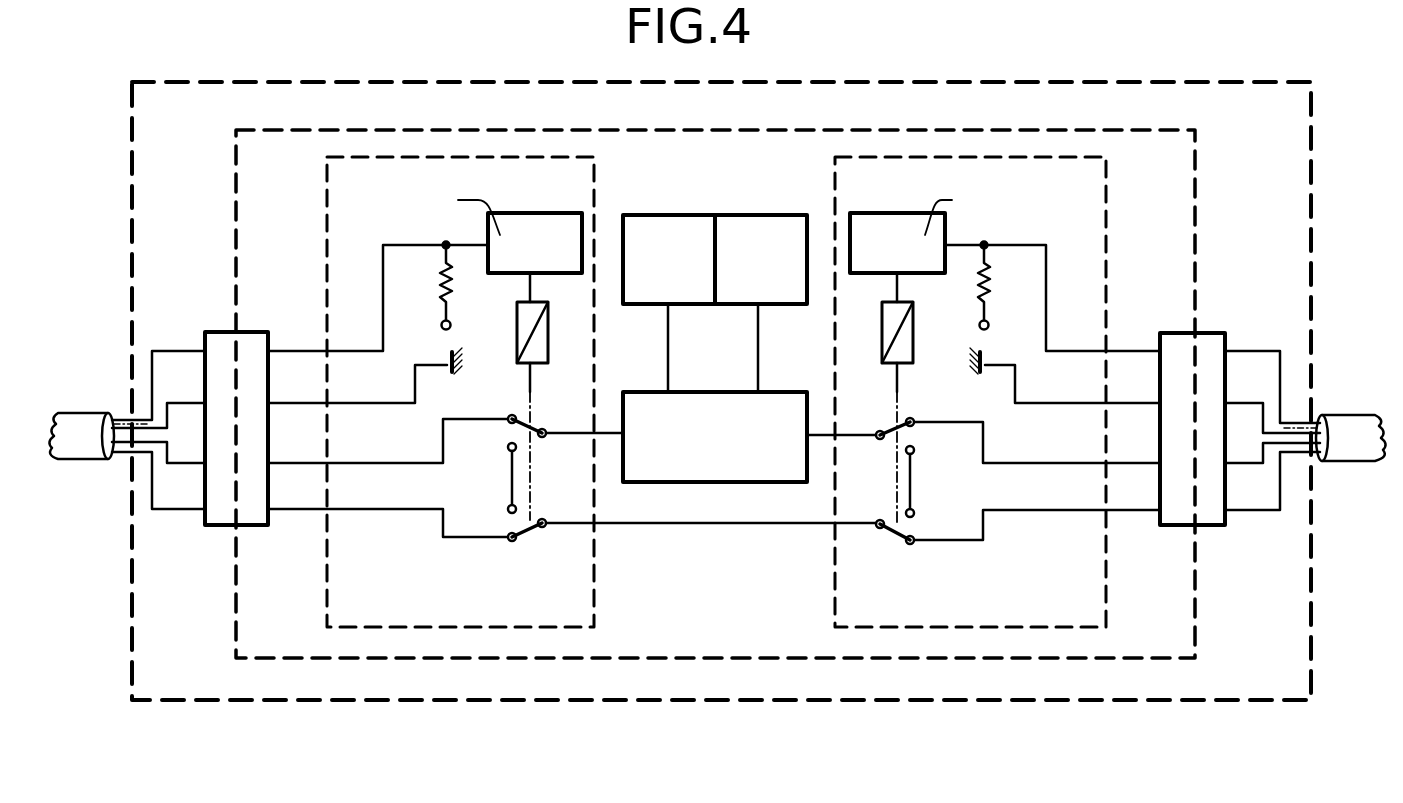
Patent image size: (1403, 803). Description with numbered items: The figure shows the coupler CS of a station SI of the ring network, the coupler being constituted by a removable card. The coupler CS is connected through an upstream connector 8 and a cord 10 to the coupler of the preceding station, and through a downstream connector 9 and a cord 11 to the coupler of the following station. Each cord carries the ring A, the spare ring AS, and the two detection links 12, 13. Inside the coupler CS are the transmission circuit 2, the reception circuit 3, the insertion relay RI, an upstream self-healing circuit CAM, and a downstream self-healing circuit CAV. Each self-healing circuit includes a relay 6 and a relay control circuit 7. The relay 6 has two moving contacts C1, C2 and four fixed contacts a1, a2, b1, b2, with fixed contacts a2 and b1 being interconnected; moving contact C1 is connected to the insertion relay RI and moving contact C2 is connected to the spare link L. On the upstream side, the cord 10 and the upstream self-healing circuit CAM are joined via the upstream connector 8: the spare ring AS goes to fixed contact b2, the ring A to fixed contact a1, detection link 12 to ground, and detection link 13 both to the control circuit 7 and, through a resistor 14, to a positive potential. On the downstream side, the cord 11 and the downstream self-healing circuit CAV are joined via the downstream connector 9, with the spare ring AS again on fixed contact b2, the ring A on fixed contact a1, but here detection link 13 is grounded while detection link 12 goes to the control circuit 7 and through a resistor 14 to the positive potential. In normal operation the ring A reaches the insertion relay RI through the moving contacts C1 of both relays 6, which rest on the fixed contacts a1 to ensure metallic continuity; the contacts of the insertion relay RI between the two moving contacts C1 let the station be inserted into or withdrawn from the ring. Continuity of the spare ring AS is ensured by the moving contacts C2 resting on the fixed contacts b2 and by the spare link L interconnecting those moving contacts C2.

The transmission circuit 2 is at (762, 228).
The reception circuit 3 is at (660, 227).
The relay 6 is at (551, 332).
The relay control circuit 7 is at (518, 224).
The upstream connector 8 is at (245, 510).
The downstream connector 9 is at (1185, 492).
The cord 10 is at (82, 420).
The cord 11 is at (1362, 415).
The detection link 12 is at (183, 403).
The detection link 13 is at (175, 351).
The resistor 14 is at (438, 292).
The station SI is at (213, 82).
The coupler CS is at (236, 163).
The upstream self-healing circuit CAM is at (326, 258).
The downstream self-healing circuit CAV is at (1108, 258).
The insertion relay RI is at (661, 400).
The spare link L is at (692, 525).
The ring A is at (186, 462).
The spare ring AS is at (168, 510).
The fixed contact a1 is at (512, 414).
The fixed contact a2 is at (508, 447).
The fixed contact b1 is at (508, 509).
The fixed contact b2 is at (511, 541).
The moving contact C1 is at (546, 430).
The moving contact C2 is at (544, 528).